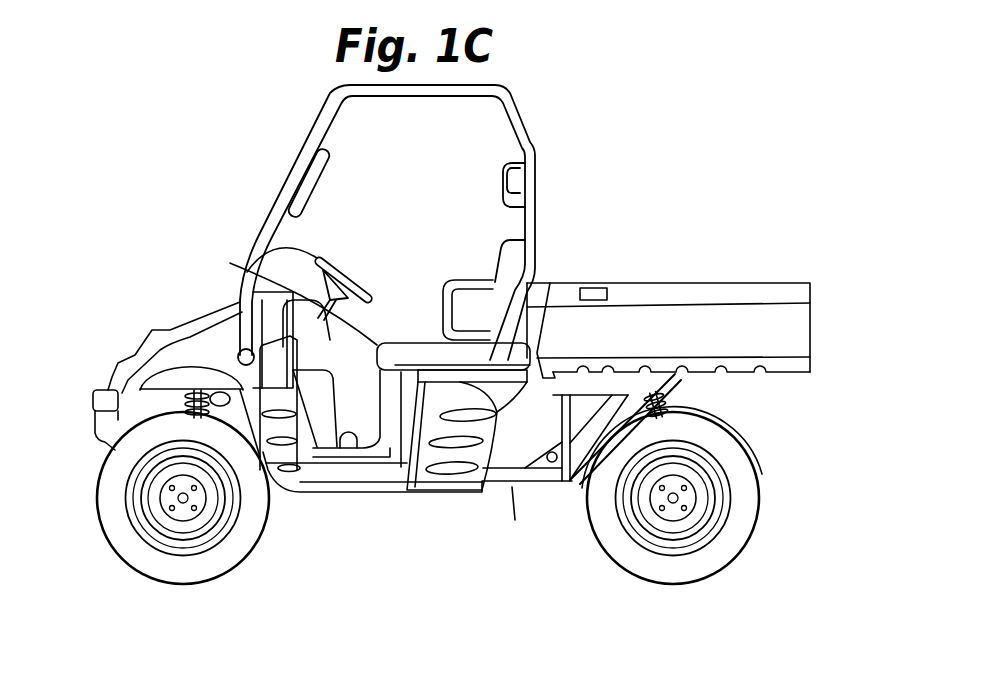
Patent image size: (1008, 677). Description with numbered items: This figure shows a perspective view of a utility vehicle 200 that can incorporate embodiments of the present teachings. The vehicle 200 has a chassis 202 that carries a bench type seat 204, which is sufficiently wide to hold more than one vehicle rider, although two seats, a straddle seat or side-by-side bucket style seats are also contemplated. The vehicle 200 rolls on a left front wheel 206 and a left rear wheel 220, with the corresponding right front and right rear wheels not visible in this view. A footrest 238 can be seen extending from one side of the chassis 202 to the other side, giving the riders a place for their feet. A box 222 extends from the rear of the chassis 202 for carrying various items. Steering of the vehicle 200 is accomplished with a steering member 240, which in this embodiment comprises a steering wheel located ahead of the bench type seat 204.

The vehicle 200 is at (668, 126).
The chassis 202 is at (512, 486).
The bench type seat 204 is at (240, 273).
The left front wheel 206 is at (218, 566).
The left rear wheel 220 is at (690, 567).
The box 222 is at (773, 283).
The footrest 238 is at (338, 448).
The steering member 240 is at (272, 234).